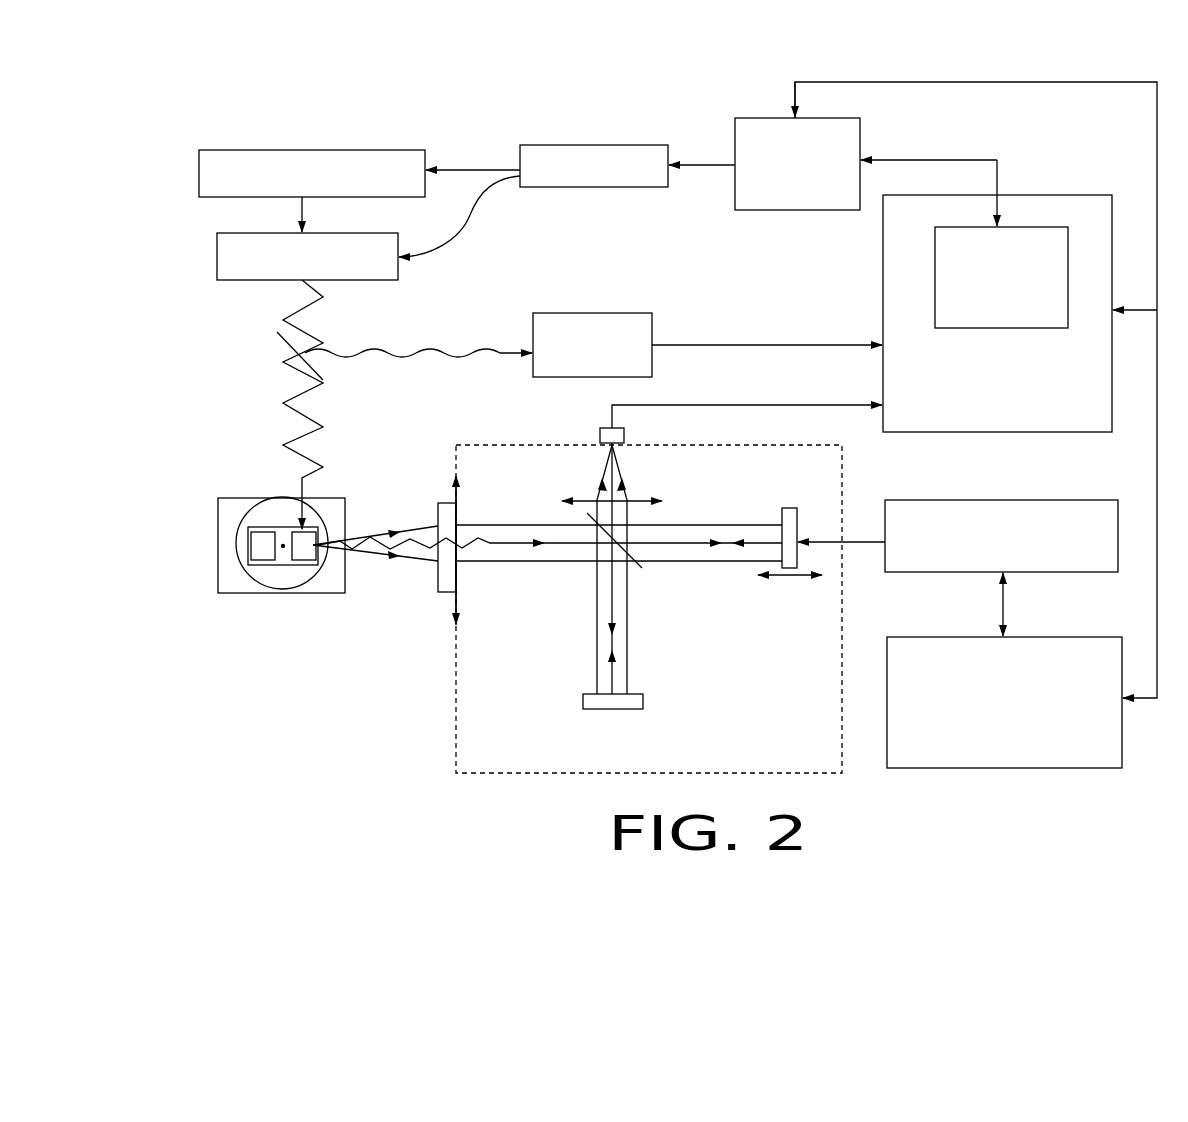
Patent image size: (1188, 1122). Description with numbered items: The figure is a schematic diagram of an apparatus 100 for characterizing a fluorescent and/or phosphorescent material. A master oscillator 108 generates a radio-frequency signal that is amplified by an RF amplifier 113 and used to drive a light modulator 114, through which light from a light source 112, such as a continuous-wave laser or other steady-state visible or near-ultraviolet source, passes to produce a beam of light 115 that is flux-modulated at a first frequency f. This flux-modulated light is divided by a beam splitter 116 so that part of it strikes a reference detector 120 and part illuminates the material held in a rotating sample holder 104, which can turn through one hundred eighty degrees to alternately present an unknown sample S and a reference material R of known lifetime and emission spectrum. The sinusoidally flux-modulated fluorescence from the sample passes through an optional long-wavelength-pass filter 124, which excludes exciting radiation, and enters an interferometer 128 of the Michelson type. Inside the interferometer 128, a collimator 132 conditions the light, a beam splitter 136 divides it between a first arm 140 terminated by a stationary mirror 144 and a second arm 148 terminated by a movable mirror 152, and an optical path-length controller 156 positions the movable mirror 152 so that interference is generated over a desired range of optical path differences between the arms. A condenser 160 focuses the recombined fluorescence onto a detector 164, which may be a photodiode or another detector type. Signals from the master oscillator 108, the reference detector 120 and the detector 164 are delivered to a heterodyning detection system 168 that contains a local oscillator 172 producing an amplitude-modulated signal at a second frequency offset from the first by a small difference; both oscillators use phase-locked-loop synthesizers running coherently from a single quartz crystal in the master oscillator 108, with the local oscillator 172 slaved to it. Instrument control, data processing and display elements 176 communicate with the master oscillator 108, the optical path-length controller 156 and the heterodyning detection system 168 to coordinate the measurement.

The apparatus 100 is at (303, 756).
The rotating sample holder 104 is at (290, 593).
The master oscillator 108 is at (773, 210).
The light source 112 is at (302, 150).
The RF amplifier 113 is at (553, 145).
The light modulator 114 is at (388, 280).
The beam of light 115 is at (305, 353).
The beam splitter 116 is at (287, 347).
The reference detector 120 is at (652, 333).
The filter 124 is at (447, 593).
The interferometer 128 is at (522, 774).
The collimator 132 is at (458, 575).
The beam splitter 136 is at (600, 548).
The first arm 140 is at (652, 677).
The stationary mirror 144 is at (643, 700).
The second arm 148 is at (749, 506).
The movable mirror 152 is at (782, 565).
The optical path-length controller 156 is at (1000, 500).
The condenser 160 is at (636, 503).
The detector 164 is at (603, 428).
The heterodyning detection system 168 is at (883, 302).
The local oscillator 172 is at (1022, 227).
The instrument control, data processing and display elements 176 is at (1010, 768).